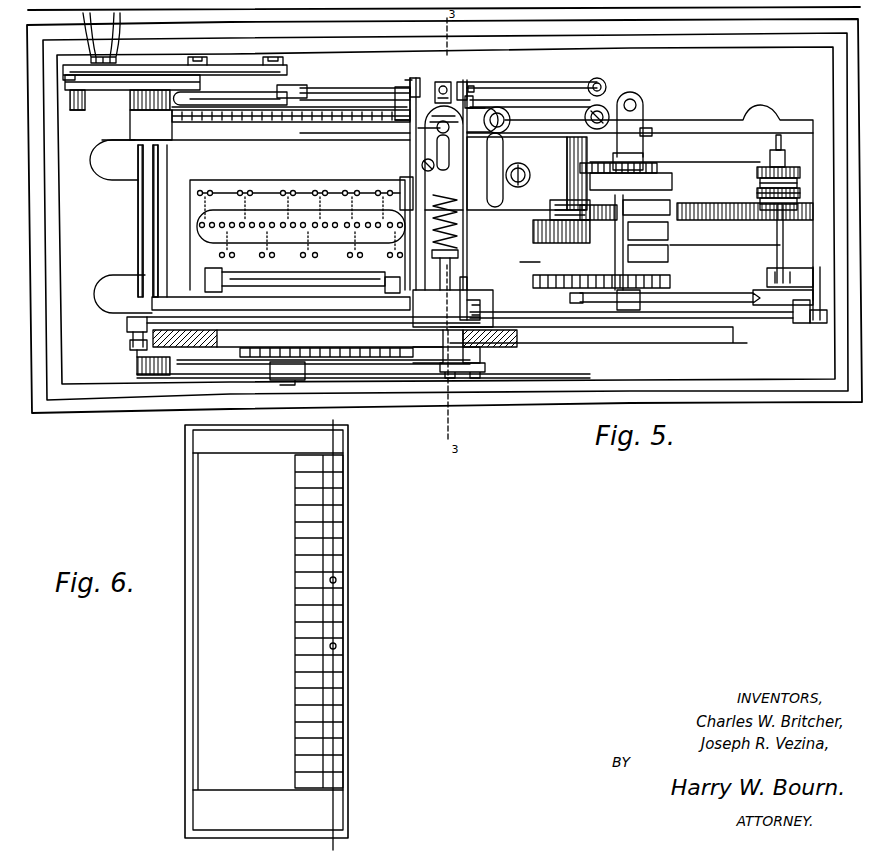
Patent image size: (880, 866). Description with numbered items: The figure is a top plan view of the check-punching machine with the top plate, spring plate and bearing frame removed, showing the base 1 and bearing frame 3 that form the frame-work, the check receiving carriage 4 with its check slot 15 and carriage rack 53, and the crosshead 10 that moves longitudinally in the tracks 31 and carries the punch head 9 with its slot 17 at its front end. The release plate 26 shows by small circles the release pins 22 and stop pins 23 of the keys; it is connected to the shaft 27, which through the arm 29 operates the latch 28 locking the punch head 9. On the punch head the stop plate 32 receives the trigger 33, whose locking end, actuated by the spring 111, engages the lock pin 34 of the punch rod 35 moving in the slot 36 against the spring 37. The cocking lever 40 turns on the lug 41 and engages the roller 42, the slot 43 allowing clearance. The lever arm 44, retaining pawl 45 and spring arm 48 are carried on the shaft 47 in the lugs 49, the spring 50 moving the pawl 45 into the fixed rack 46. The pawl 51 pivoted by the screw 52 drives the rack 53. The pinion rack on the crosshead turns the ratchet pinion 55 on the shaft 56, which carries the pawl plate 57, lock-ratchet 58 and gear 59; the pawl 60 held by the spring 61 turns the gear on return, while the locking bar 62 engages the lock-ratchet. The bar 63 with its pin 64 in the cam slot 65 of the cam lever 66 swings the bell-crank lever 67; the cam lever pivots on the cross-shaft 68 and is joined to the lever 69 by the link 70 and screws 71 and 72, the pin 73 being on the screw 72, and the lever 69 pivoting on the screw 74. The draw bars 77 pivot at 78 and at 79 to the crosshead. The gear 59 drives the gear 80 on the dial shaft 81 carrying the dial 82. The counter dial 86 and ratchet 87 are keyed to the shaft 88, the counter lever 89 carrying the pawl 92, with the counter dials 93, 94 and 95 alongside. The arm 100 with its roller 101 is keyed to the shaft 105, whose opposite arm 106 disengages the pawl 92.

The base 1 is at (690, 112).
The bearing frame 3 is at (281, 304).
The check receiving carriage 4 is at (538, 338).
The punch head 9 is at (451, 204).
The crosshead 10 is at (701, 223).
The check slot 15 is at (298, 338).
The slot 17 is at (450, 330).
The release pin 22 is at (197, 193).
The stop pin 23 is at (283, 191).
The release plate 26 is at (345, 186).
The shaft 27 is at (302, 276).
The latch 28 is at (475, 306).
The arm 29 is at (466, 292).
The tracks 31 is at (740, 120).
The stop plate 32 is at (402, 190).
The trigger 33 is at (426, 208).
The lock pin 34 is at (448, 130).
The punch rod 35 is at (443, 82).
The slot 36 is at (449, 152).
The spring 37 is at (456, 230).
The cocking lever 40 is at (517, 173).
The lug 41 is at (511, 120).
The roller 42 is at (518, 163).
The slot 43 is at (633, 175).
The lever arm 44 is at (462, 82).
The carriage retaining pawl 45 is at (396, 107).
The fixed rack 46 is at (340, 121).
The shaft 47 is at (415, 78).
The spring arm 48 is at (470, 98).
The lugs 49 is at (406, 80).
The spring 50 is at (490, 110).
The pawl 51 is at (483, 356).
The screw 52 is at (466, 372).
The carriage rack 53 is at (326, 344).
The ratchet pinion 55 is at (555, 216).
The shaft 56 is at (567, 158).
The pawl plate 57 is at (540, 262).
The lock-ratchet 58 is at (535, 280).
The gear 59 is at (545, 290).
The pawl 60 is at (533, 230).
The spring 61 is at (616, 246).
The locking bar 62 is at (643, 160).
The reciprocating bar 63 is at (232, 94).
The pin 64 is at (198, 96).
The cam slot 65 is at (648, 254).
The cam lever 66 is at (110, 84).
The bell-crank lever 67 is at (630, 96).
The cross-shaft 68 is at (140, 206).
The lever 69 is at (240, 62).
The link 70 is at (120, 92).
The screw 71 is at (190, 57).
The screw 72 is at (76, 66).
The pin 73 is at (76, 111).
The screw 74 is at (285, 58).
The draw bars 77 is at (322, 110).
The pivotal connection 78 is at (298, 86).
The pivotal connection 79 is at (420, 350).
The gear 80 is at (650, 292).
The dial shaft 81 is at (648, 132).
The dial 82 is at (631, 181).
The counter dial 86 is at (757, 172).
The ratchet 87 is at (770, 276).
The shaft 88 is at (782, 135).
The counter lever 89 is at (783, 255).
The pawl 92 is at (815, 268).
The counter dial 93 is at (760, 181).
The counter dial 94 is at (780, 193).
The counter dial 95 is at (760, 204).
The arm 100 is at (126, 325).
The roller 101 is at (132, 345).
The shaft 105 is at (112, 276).
The arm 106 is at (822, 290).
The spring 111 is at (400, 90).